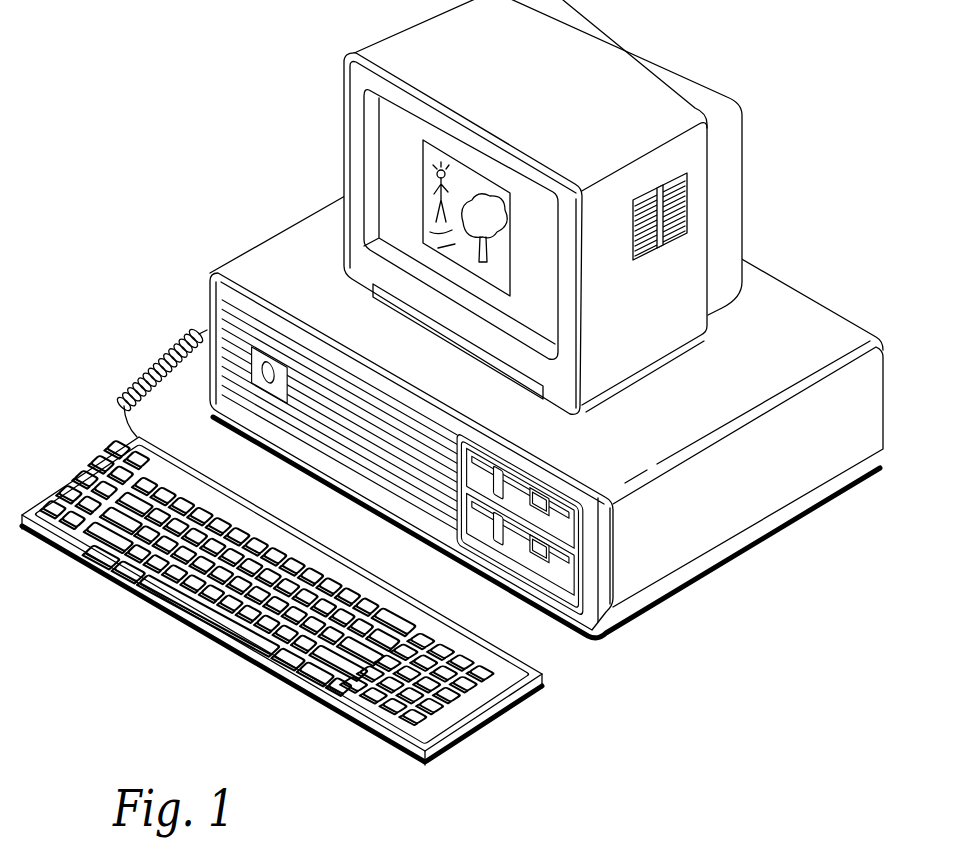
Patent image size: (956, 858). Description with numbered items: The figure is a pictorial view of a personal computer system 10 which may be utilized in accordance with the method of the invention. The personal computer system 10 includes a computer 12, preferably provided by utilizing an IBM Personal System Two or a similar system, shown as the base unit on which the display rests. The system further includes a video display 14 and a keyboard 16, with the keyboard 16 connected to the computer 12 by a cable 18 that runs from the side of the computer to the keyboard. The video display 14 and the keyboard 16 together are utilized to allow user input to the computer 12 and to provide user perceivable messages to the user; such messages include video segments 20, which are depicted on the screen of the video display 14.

The personal computer system 10 is at (222, 102).
The computer 12 is at (735, 516).
The video display 14 is at (728, 212).
The keyboard 16 is at (330, 718).
The cable 18 is at (142, 375).
The video segments 20 is at (514, 259).